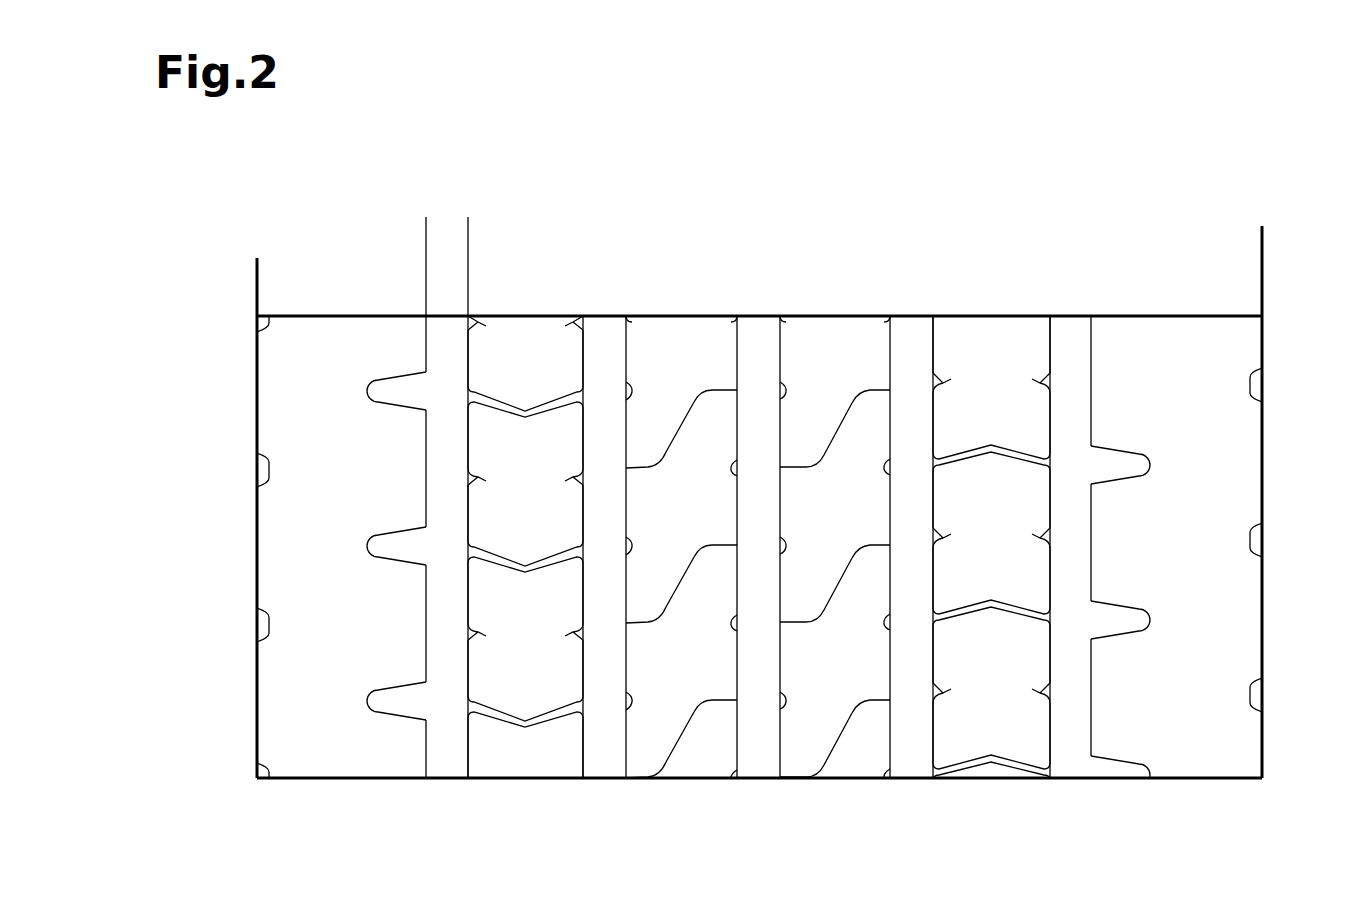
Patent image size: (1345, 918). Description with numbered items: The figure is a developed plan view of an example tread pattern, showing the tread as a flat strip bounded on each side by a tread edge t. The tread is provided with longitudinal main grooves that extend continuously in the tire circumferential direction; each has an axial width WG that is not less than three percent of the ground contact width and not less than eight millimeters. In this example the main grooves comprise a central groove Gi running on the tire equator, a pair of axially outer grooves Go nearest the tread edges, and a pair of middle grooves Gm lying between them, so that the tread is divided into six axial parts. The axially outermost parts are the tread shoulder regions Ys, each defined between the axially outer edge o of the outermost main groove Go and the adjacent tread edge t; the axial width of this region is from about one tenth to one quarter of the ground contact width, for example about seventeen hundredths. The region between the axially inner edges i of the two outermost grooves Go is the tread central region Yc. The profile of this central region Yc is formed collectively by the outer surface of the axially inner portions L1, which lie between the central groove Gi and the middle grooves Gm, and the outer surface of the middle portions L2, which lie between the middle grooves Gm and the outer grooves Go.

The tread edge t is at (257, 277).
The tread shoulder region Ys is at (413, 217).
The tread central region Yc is at (1045, 223).
The axial width of main groove WG is at (400, 226).
The axially outer main groove Go is at (752, 545).
The axially outer edge of outermost main groove o is at (426, 280).
The axially inner edge of outermost main groove i is at (468, 282).
The middle main groove Gm is at (602, 760).
The central main groove Gi is at (756, 758).
The middle portion L2 is at (525, 760).
The axially inner portion L1 is at (694, 760).